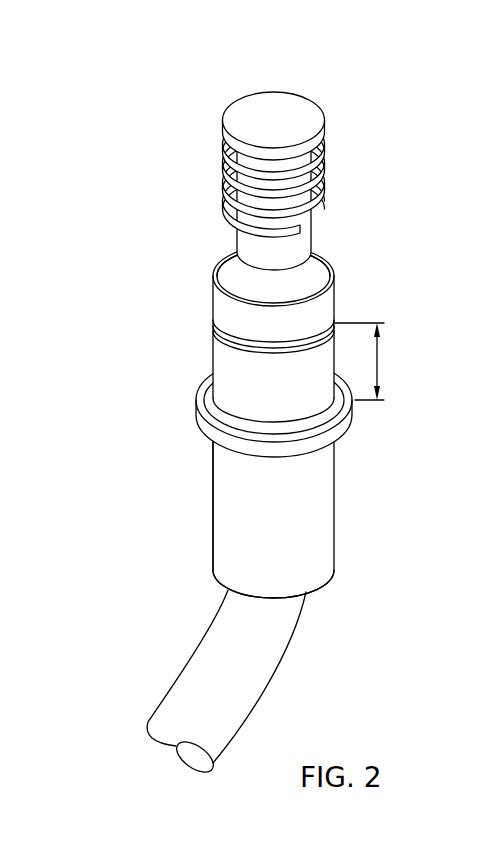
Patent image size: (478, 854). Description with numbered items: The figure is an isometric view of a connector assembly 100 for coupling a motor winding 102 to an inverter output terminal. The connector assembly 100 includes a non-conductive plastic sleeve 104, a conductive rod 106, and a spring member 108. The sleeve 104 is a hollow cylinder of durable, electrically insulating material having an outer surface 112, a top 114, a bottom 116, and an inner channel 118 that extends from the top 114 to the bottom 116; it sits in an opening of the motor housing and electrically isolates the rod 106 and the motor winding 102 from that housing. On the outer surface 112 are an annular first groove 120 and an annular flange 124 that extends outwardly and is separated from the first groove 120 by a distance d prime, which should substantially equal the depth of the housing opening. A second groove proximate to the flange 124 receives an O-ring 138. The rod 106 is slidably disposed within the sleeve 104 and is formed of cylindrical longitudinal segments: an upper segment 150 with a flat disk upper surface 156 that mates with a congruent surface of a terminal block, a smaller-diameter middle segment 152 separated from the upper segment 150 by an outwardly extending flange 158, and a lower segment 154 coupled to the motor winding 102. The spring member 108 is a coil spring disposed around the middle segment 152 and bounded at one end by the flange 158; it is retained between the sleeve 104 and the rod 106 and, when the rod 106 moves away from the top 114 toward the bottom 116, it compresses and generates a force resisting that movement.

The connector assembly 100 is at (231, 415).
The motor winding 102 is at (193, 653).
The non-conductive plastic sleeve 104 is at (336, 510).
The conductive rod 106 is at (306, 236).
The spring member 108 is at (223, 172).
The outer surface 112 is at (220, 502).
The top 114 is at (217, 253).
The bottom 116 is at (320, 590).
The inner channel 118 is at (323, 272).
The annular first groove 120 is at (274, 356).
The annular flange 124 is at (204, 400).
The O-ring 138 is at (218, 407).
The upper segment 150 is at (326, 129).
The middle segment 152 is at (301, 246).
The lower segment 154 is at (242, 277).
The upper surface 156 is at (276, 95).
The flange 158 is at (297, 163).